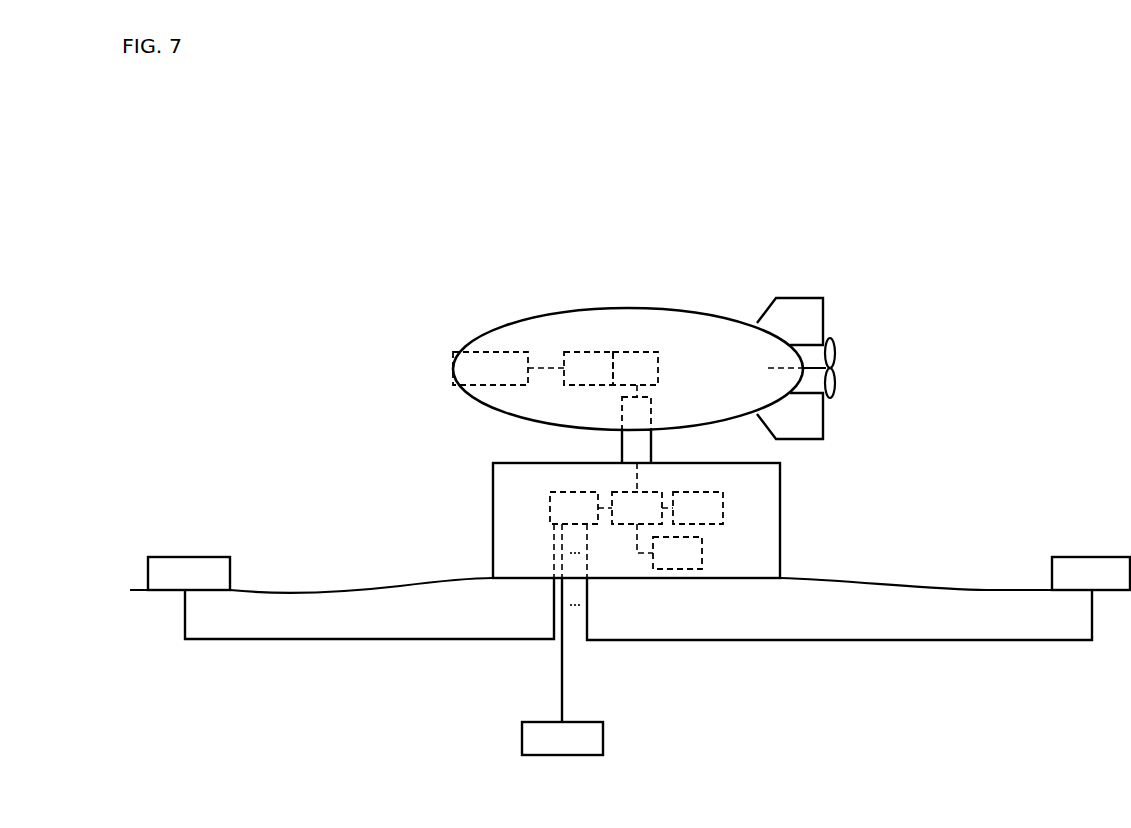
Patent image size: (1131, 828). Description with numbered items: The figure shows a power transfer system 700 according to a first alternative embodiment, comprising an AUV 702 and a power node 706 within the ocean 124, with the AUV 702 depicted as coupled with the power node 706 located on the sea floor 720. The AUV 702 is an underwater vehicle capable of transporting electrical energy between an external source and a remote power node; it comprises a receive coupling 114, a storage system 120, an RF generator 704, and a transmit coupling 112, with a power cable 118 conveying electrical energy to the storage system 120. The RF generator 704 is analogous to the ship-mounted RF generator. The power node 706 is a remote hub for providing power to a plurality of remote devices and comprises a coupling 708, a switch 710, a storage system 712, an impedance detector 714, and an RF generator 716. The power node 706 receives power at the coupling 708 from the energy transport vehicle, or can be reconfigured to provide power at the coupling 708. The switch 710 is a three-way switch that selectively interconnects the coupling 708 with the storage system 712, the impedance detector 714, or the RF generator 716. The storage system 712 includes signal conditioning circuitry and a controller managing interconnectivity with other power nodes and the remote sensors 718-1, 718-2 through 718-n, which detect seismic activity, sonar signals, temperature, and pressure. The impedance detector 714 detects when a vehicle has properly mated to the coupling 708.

The system 700 is at (378, 204).
The AUV 702 is at (690, 327).
The RF generator 704 is at (650, 378).
The power node 706 is at (770, 550).
The coupling 708 is at (640, 448).
The switch 710 is at (652, 518).
The storage system 712 is at (590, 518).
The impedance detector 714 is at (713, 518).
The RF generator 716 is at (693, 563).
The remote sensor 718-1 is at (212, 583).
The remote sensor 718-2 is at (585, 748).
The remote sensor 718-n is at (1115, 583).
The sea floor 720 is at (1090, 748).
The ocean 124 is at (1015, 501).
The transmit coupling 112 is at (647, 412).
The receive coupling 114 is at (512, 378).
The power cable 118 is at (543, 368).
The storage system 120 is at (602, 378).